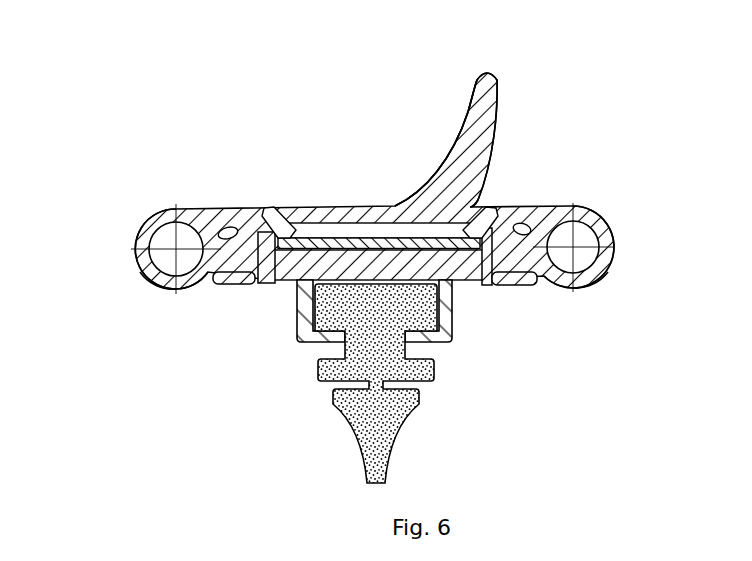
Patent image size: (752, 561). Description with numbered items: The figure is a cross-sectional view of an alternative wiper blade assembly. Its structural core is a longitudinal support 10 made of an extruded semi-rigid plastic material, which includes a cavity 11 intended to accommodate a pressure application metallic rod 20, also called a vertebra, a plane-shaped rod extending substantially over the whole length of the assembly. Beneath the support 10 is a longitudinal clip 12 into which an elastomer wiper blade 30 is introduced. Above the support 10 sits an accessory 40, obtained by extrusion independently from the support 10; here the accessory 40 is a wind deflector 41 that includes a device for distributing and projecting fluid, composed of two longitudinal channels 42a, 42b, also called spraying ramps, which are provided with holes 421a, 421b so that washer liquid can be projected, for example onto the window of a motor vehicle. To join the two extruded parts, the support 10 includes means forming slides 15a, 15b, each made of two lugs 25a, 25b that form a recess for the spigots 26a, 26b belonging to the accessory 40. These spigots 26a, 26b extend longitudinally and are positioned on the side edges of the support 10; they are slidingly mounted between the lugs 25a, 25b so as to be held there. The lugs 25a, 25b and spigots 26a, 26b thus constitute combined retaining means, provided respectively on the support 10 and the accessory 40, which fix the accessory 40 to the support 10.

The longitudinal support 10 is at (445, 343).
The cavity 11 is at (388, 235).
The longitudinal clip 12 is at (303, 343).
The means forming slide 15a is at (284, 233).
The means forming slide 15b is at (494, 210).
The pressure application metallic rod 20 is at (277, 287).
The lug 25a is at (244, 228).
The lug 25b is at (522, 227).
The spigot 26a is at (258, 236).
The spigot 26b is at (496, 272).
The elastomer wiper blade 30 is at (389, 463).
The accessory 40 is at (508, 91).
The wind deflector 41 is at (454, 150).
The longitudinal channel 42a is at (140, 222).
The longitudinal channel 42b is at (614, 219).
The hole 421a is at (150, 273).
The hole 421b is at (600, 280).